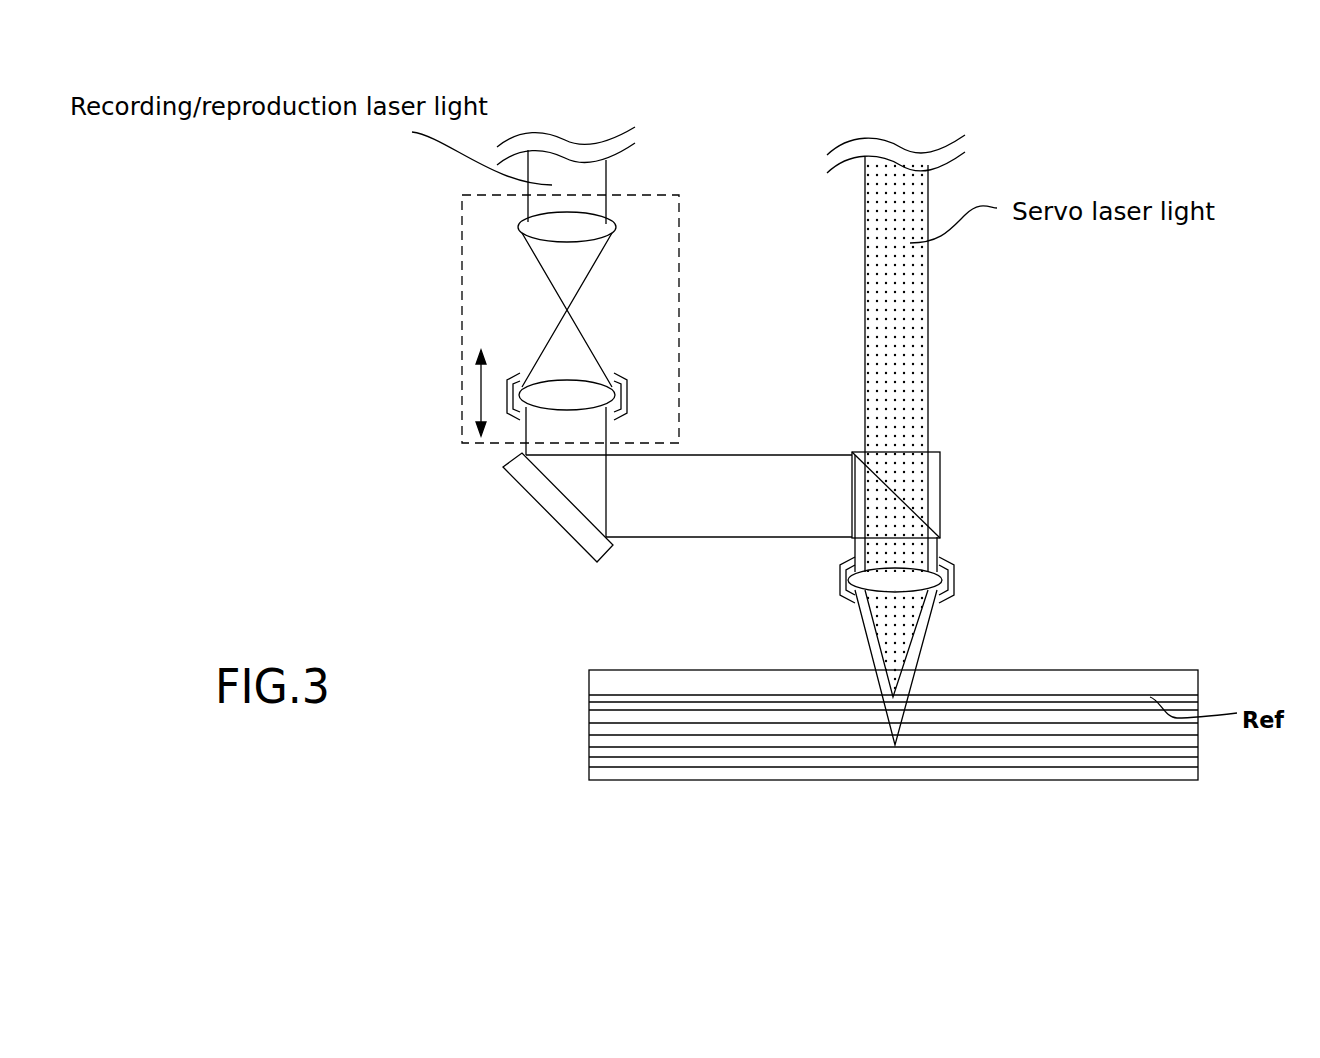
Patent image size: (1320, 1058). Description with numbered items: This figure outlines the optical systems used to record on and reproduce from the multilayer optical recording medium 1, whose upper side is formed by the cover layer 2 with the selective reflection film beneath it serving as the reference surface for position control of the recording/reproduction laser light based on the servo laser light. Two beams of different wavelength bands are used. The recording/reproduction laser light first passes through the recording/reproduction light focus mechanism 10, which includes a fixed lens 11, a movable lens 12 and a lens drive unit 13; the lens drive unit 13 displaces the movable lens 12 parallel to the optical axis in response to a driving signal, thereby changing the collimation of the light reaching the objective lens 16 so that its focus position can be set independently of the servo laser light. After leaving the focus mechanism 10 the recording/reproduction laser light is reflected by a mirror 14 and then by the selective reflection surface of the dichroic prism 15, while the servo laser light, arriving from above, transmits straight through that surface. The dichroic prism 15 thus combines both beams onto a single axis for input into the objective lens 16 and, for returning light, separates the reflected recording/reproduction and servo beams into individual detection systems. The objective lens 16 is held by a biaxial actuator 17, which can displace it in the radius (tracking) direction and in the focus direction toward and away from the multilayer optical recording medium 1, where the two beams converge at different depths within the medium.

The multilayer optical recording medium 1 is at (1226, 786).
The cover layer 2 is at (1180, 682).
The recording/reproduction light focus mechanism 10 is at (460, 260).
The fixed lens 11 is at (605, 233).
The movable lens 12 is at (548, 393).
The lens drive unit 13 is at (627, 378).
The mirror 14 is at (532, 505).
The dichroic prism 15 is at (940, 513).
The objective lens 16 is at (898, 582).
The biaxial actuator 17 is at (955, 578).